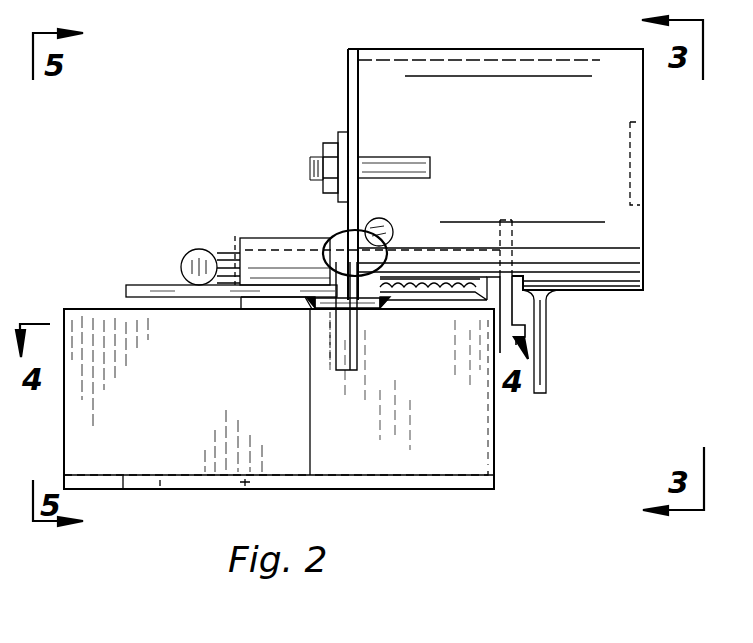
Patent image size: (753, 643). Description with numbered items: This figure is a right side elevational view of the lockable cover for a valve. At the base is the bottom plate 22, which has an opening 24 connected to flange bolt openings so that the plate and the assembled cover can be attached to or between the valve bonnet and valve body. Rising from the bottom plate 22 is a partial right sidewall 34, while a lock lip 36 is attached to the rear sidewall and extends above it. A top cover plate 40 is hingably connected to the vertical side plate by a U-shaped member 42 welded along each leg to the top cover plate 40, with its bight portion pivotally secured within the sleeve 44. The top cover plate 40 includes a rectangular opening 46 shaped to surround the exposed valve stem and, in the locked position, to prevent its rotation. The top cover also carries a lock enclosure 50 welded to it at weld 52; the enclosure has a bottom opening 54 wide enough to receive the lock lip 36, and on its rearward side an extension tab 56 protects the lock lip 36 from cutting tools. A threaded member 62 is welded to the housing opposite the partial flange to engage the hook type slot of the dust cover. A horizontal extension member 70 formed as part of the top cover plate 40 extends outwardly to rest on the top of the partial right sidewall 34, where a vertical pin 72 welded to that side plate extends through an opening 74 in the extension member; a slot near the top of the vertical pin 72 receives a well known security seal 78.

The bottom plate 22 is at (92, 473).
The opening 24 is at (148, 483).
The partial right sidewall 34 is at (412, 370).
The lock lip 36 is at (512, 310).
The top cover plate 40 is at (145, 285).
The U-shaped member 42 is at (190, 254).
The sleeve 44 is at (290, 238).
The rectangular opening 46 is at (235, 240).
The lock enclosure 50 is at (540, 50).
The weld 52 is at (452, 275).
The bottom opening 54 is at (513, 275).
The extension tab 56 is at (547, 378).
The threaded member 62 is at (385, 165).
The horizontal extension member 70 is at (318, 301).
The vertical pin 72 is at (346, 372).
The opening 74 is at (330, 312).
The security seal 78 is at (386, 226).